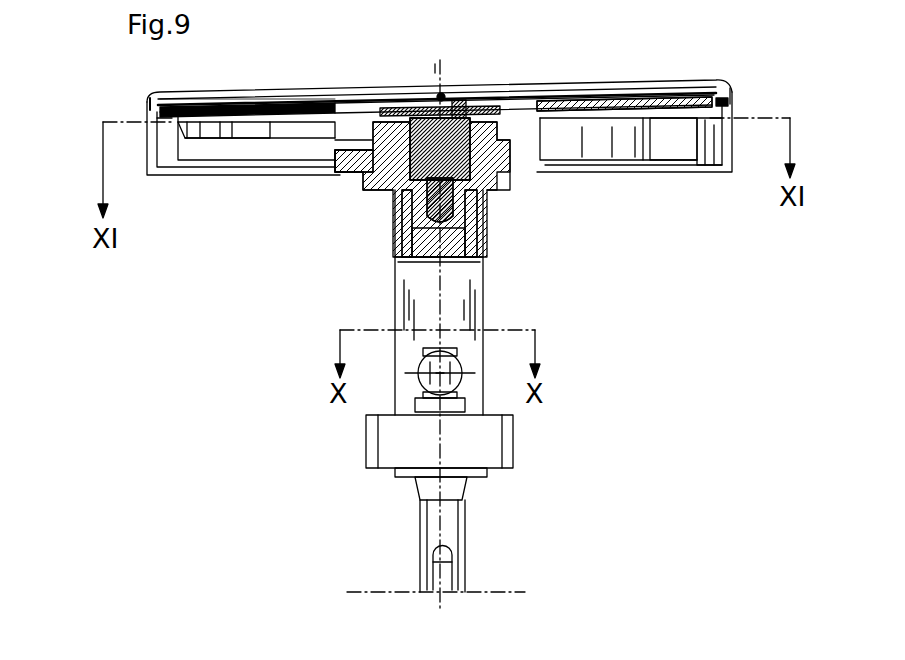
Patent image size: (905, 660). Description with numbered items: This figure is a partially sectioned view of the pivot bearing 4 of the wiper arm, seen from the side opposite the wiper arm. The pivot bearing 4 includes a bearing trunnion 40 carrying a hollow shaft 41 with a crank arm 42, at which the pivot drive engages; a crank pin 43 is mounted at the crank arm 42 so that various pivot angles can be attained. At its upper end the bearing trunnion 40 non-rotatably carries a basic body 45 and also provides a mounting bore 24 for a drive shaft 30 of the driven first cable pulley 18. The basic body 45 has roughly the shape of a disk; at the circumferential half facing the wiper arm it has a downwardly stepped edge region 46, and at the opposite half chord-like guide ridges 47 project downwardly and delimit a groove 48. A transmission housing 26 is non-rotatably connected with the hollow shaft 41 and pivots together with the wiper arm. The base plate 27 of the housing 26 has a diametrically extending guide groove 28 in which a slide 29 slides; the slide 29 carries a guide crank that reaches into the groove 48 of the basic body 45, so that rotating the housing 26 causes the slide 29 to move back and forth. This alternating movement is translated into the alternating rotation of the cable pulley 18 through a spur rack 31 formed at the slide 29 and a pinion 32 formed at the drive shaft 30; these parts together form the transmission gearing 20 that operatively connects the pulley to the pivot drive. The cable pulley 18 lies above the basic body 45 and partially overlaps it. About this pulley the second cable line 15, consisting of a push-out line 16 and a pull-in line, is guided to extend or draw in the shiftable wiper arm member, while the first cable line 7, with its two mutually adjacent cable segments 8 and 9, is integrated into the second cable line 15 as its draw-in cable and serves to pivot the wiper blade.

The pivot bearing 4 is at (277, 150).
The first cable line 7 is at (788, 74).
The cable segment 8 is at (150, 106).
The cable segment 9 is at (172, 120).
The second cable line 15 is at (735, 100).
The push-out line 16 is at (150, 106).
The driven first cable pulley 18 is at (683, 100).
The transmission gearing 20 is at (385, 140).
The mounting bore 24 is at (410, 240).
The transmission housing 26 is at (650, 85).
The base plate 27 is at (620, 167).
The guide groove 28 is at (400, 175).
The slide 29 is at (388, 82).
The drive shaft 30 is at (443, 98).
The spur rack 31 is at (408, 82).
The pinion 32 is at (449, 112).
The bearing trunnion 40 is at (455, 250).
The hollow shaft 41 is at (452, 288).
The crank arm 42 is at (398, 448).
The crank pin 43 is at (430, 375).
The basic body 45 is at (570, 112).
The stepped edge region 46 is at (670, 138).
The guide ridges 47 is at (230, 126).
The groove 48 is at (198, 142).